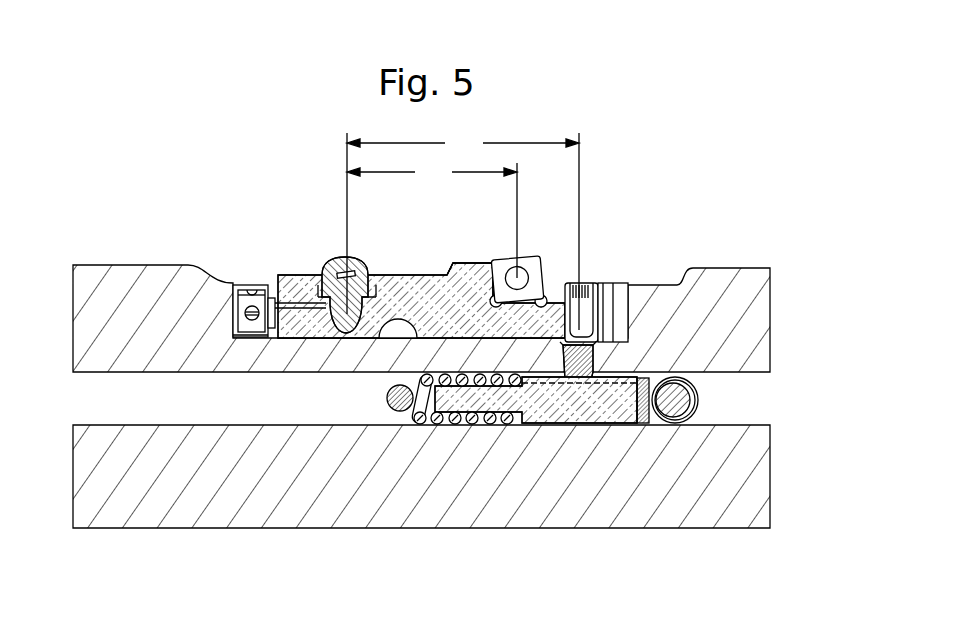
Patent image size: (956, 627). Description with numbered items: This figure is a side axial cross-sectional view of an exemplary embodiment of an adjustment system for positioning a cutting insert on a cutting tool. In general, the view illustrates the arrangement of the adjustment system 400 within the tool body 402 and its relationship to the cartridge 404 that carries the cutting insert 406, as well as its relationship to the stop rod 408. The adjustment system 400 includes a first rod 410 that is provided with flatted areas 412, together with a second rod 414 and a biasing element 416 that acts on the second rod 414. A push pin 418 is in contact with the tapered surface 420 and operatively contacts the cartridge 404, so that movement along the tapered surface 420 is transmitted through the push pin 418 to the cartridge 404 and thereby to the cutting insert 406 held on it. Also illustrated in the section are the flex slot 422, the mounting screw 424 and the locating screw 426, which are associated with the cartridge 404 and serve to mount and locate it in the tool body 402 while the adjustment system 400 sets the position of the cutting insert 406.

The adjustment system 400 is at (722, 344).
The tool body 402 is at (120, 282).
The cartridge 404 is at (478, 268).
The cutting insert 406 is at (538, 262).
The stop rod 408 is at (390, 395).
The first rod 410 is at (695, 387).
The flatted areas 412 is at (695, 408).
The second rod 414 is at (622, 425).
The biasing element 416 is at (477, 425).
The push pin 418 is at (590, 360).
The tapered surface 420 is at (572, 425).
The flex slot 422 is at (398, 322).
The mounting screw 424 is at (333, 258).
The locating screw 426 is at (236, 285).